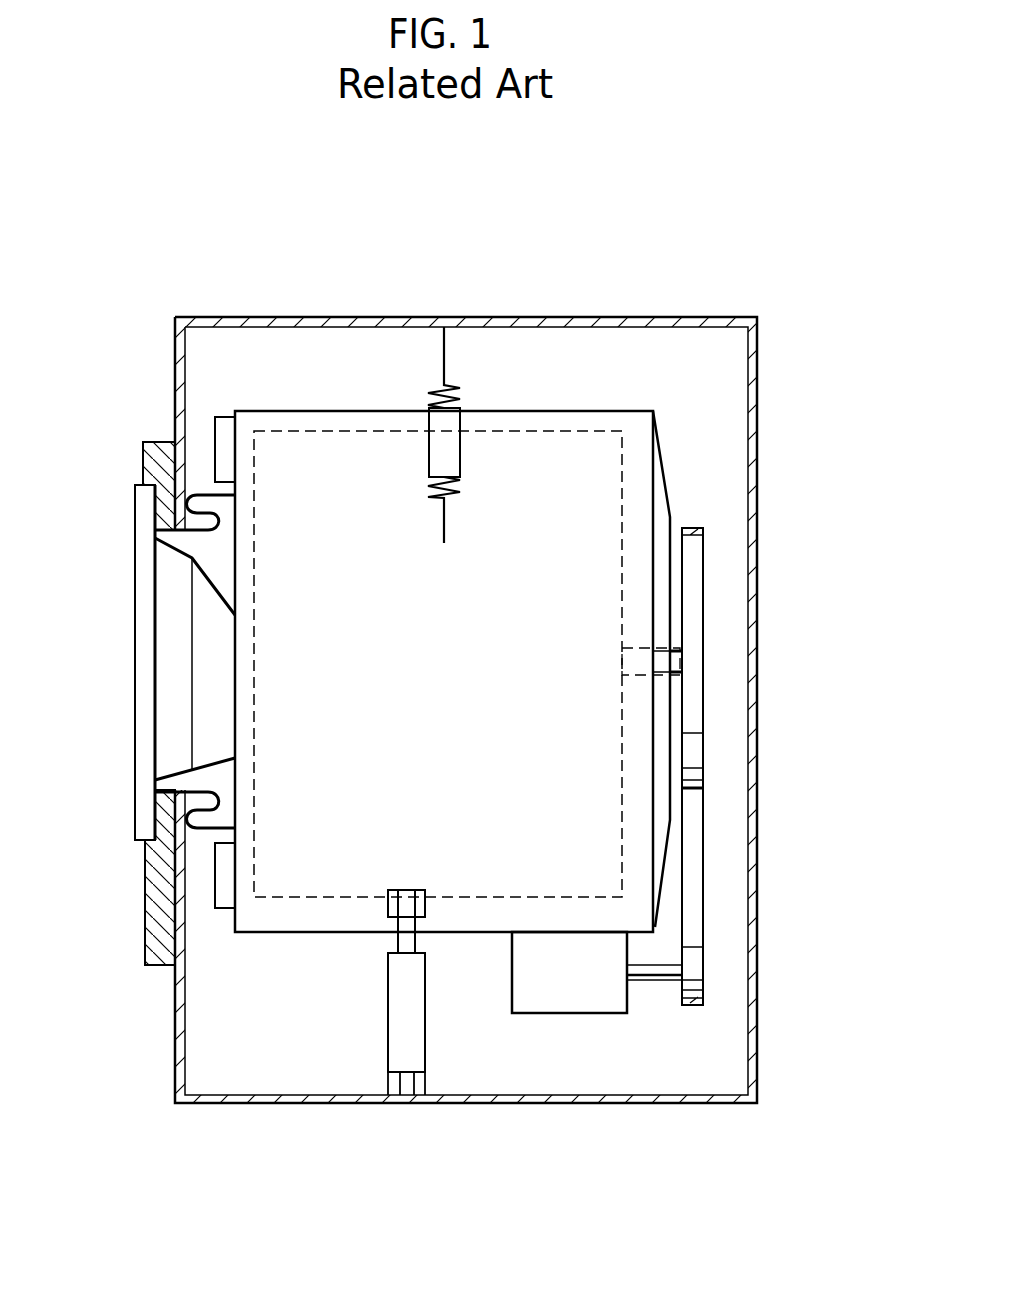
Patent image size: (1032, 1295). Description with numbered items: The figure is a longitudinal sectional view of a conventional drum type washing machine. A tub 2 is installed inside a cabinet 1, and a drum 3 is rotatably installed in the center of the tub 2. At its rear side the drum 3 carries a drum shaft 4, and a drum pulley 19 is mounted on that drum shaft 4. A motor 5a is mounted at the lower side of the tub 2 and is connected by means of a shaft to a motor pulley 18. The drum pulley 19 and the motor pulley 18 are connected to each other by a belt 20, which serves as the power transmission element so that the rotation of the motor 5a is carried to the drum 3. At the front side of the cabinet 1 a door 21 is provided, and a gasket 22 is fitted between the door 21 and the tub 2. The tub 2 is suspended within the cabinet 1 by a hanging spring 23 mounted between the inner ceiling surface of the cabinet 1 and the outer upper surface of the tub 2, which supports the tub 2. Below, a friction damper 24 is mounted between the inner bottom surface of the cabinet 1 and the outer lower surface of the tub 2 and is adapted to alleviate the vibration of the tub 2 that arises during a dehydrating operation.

The cabinet 1 is at (256, 317).
The tub 2 is at (568, 411).
The drum 3 is at (352, 430).
The shaft 4 is at (678, 662).
The motor 5a is at (565, 995).
The motor pulley 18 is at (698, 970).
The drum pulley 19 is at (695, 613).
The belt 20 is at (698, 872).
The door 21 is at (145, 658).
The gasket 22 is at (200, 833).
The hanging spring 23 is at (450, 392).
The friction damper 24 is at (398, 1028).